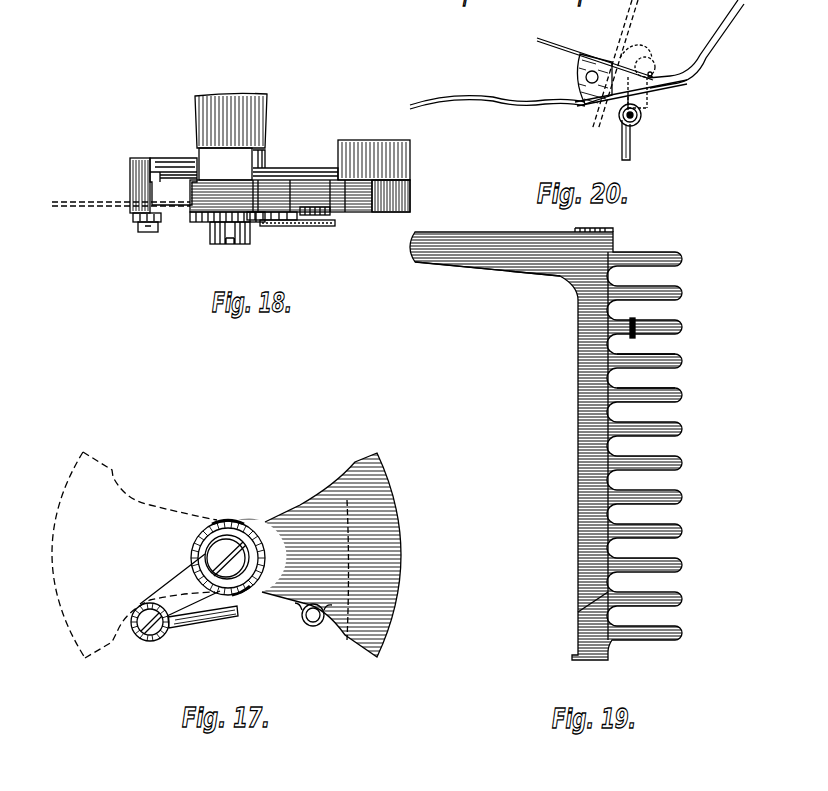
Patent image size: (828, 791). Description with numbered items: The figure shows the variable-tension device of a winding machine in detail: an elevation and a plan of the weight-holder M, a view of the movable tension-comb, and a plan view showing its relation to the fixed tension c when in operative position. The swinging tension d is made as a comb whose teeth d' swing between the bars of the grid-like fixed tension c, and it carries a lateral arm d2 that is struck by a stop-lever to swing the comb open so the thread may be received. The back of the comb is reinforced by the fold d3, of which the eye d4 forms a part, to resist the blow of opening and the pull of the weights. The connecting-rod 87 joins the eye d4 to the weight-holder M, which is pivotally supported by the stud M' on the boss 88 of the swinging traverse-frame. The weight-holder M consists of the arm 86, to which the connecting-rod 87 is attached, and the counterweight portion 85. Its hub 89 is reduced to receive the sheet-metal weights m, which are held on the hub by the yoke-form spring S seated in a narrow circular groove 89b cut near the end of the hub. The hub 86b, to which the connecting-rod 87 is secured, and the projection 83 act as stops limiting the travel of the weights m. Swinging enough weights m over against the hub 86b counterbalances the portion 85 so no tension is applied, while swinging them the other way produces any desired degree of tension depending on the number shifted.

In FIG. 18, the projection 83 is at (330, 214).
In FIG. 17, the projection 83 is at (313, 627).
In FIG. 18, the counterweight portion 85 is at (372, 148).
In FIG. 18, the arm 86 is at (165, 168).
In FIG. 17, the arm 86 is at (188, 582).
In FIG. 18, the hub 86b is at (130, 190).
In FIG. 18, the connecting-rod 87 is at (315, 226).
In FIG. 20, the connecting-rod 87 is at (622, 150).
In FIG. 17, the connecting-rod 87 is at (215, 613).
In FIG. 18, the boss 88 is at (231, 120).
In FIG. 18, the hub 89 is at (225, 164).
In FIG. 18, the circular groove 89b is at (257, 222).
In FIG. 18, the weight-holder M is at (300, 171).
In FIG. 18, the stud M' is at (230, 247).
In FIG. 17, the stud M' is at (227, 529).
In FIG. 18, the spring S is at (200, 222).
In FIG. 17, the spring S is at (254, 530).
In FIG. 18, the weights m is at (412, 196).
In FIG. 17, the weights m is at (404, 557).
In FIG. 20, the swinging tension d is at (612, 85).
In FIG. 19, the swinging tension d is at (550, 444).
In FIG. 19, the teeth d' is at (671, 375).
In FIG. 20, the lateral arm d2 is at (493, 100).
In FIG. 19, the lateral arm d2 is at (487, 258).
In FIG. 19, the fold d3 is at (594, 468).
In FIG. 20, the eye d4 is at (648, 106).
In FIG. 19, the eye d4 is at (636, 322).
In FIG. 20, the fixed tension c is at (652, 68).
In FIG. 20, the frame bar C is at (722, 4).